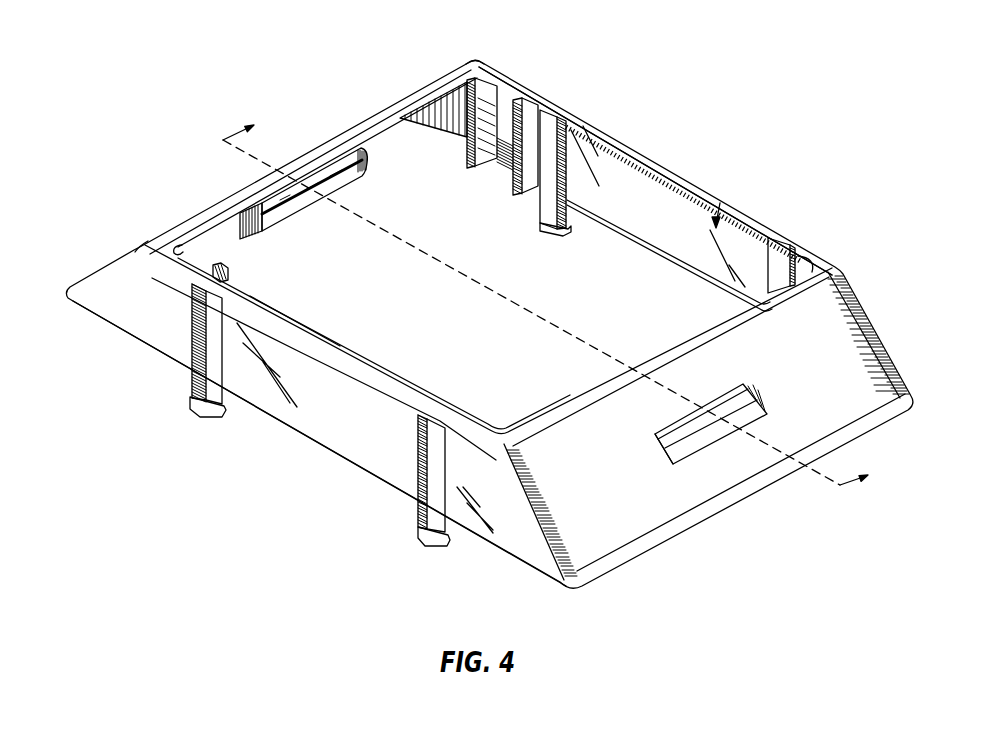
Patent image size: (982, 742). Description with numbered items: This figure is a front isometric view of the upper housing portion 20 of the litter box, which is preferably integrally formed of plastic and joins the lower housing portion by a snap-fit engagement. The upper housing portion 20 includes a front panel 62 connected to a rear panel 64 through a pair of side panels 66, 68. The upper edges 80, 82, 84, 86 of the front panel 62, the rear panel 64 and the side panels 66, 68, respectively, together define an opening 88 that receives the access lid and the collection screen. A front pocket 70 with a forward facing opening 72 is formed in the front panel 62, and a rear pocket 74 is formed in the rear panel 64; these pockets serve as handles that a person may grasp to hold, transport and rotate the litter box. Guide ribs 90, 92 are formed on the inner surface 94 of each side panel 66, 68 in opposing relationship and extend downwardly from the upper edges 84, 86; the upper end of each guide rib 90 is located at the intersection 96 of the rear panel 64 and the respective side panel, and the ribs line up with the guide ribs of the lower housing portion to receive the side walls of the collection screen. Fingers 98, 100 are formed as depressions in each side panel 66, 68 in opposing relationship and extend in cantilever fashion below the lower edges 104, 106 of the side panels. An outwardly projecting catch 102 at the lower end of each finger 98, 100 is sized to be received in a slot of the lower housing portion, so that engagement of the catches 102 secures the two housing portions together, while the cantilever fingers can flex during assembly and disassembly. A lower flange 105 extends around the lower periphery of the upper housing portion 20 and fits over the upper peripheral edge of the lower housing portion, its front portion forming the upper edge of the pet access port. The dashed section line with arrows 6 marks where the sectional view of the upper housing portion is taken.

The upper housing portion 20 is at (340, 122).
The front panel 62 is at (630, 548).
The rear panel 64 is at (200, 217).
The side panel 66 is at (380, 457).
The side panel 68 is at (648, 168).
The front pocket 70 is at (747, 390).
The forward facing opening 72 is at (693, 457).
The rear pocket 74 is at (340, 188).
The upper edge 80 is at (573, 415).
The upper edge 82 is at (392, 127).
The upper edge 84 is at (340, 346).
The upper edge 86 is at (698, 200).
The opening 88 is at (720, 203).
The guide rib 90 is at (482, 80).
The guide rib 92 is at (527, 104).
The inner surface 94 is at (630, 200).
The intersection 96 is at (147, 242).
The finger 98 is at (423, 438).
The finger 100 is at (548, 120).
The catch 102 is at (566, 235).
The lower edge 104 is at (303, 437).
The lower flange 105 is at (503, 162).
The lower edge 106 is at (718, 289).
The section line 6- 6 is at (554, 299).